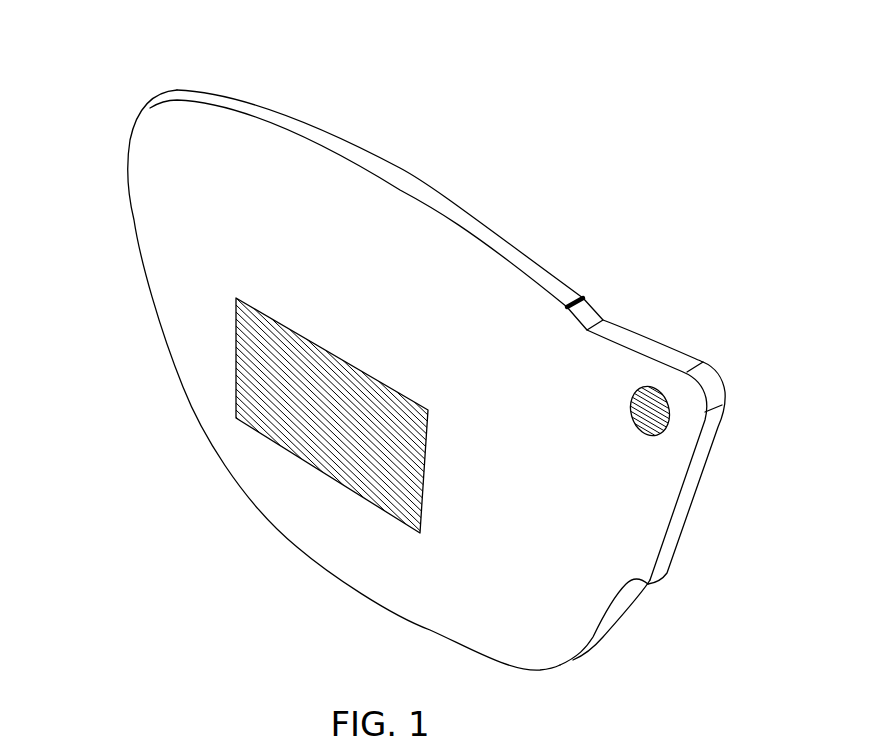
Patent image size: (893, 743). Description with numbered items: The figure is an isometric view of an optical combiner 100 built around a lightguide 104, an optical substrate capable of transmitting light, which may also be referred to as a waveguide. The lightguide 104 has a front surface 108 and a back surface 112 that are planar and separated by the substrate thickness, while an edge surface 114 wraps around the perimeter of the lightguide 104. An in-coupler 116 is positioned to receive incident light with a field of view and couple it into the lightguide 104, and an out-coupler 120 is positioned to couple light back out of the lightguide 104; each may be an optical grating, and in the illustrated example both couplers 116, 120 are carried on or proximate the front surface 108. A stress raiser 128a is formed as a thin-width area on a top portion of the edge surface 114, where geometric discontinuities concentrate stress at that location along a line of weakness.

The optical combiner 100 is at (410, 148).
The lightguide 104 is at (265, 115).
The front surface 108 is at (143, 210).
The back surface 112 is at (455, 198).
The edge surface 114 is at (497, 238).
The in-coupler 116 is at (660, 427).
The out-coupler 120 is at (263, 412).
The stress raiser 128a is at (573, 297).